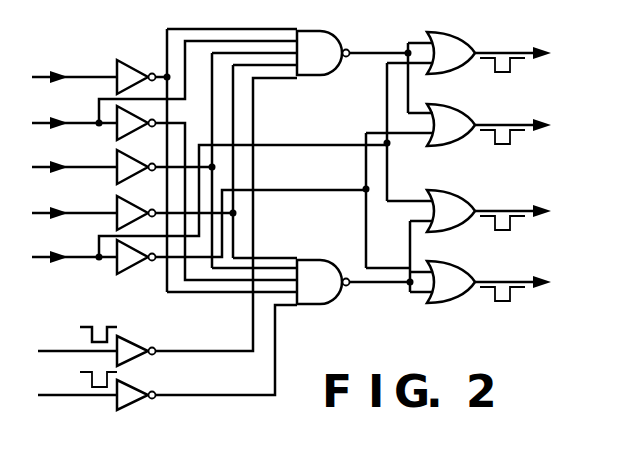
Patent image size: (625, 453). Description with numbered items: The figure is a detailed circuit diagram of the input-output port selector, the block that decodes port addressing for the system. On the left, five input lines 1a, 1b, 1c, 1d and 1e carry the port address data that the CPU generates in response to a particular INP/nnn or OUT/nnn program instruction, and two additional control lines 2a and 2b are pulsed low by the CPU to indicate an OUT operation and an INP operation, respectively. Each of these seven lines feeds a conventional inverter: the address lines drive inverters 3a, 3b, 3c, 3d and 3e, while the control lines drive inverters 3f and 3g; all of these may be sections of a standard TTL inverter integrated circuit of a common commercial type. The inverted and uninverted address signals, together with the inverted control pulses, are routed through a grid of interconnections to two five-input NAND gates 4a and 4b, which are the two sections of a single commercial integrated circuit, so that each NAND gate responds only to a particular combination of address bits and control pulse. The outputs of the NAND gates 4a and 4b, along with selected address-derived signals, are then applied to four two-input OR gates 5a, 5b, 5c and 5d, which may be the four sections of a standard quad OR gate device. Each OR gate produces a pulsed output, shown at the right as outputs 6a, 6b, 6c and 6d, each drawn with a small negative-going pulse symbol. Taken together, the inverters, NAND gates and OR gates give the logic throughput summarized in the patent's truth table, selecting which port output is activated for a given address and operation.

The input line 1a is at (45, 73).
The input line 1b is at (45, 121).
The input line 1c is at (45, 165).
The input line 1d is at (46, 210).
The input line 1e is at (37, 256).
The control line 2a is at (62, 347).
The control line 2b is at (54, 392).
The inverter 3a is at (122, 60).
The inverter 3b is at (118, 133).
The inverter 3c is at (118, 182).
The inverter 3d is at (116, 221).
The inverter 3e is at (118, 269).
The inverter 3f is at (133, 342).
The inverter 3g is at (139, 389).
The five input NAND gate 4a is at (310, 31).
The five input NAND gate 4b is at (308, 260).
The 2-input OR gate 5a is at (437, 32).
The 2-input OR gate 5b is at (447, 106).
The 2-input OR gate 5c is at (444, 191).
The 2-input OR gate 5d is at (451, 263).
The output signal 6a is at (488, 51).
The output signal 6b is at (489, 122).
The output signal 6c is at (485, 208).
The output signal 6d is at (503, 279).